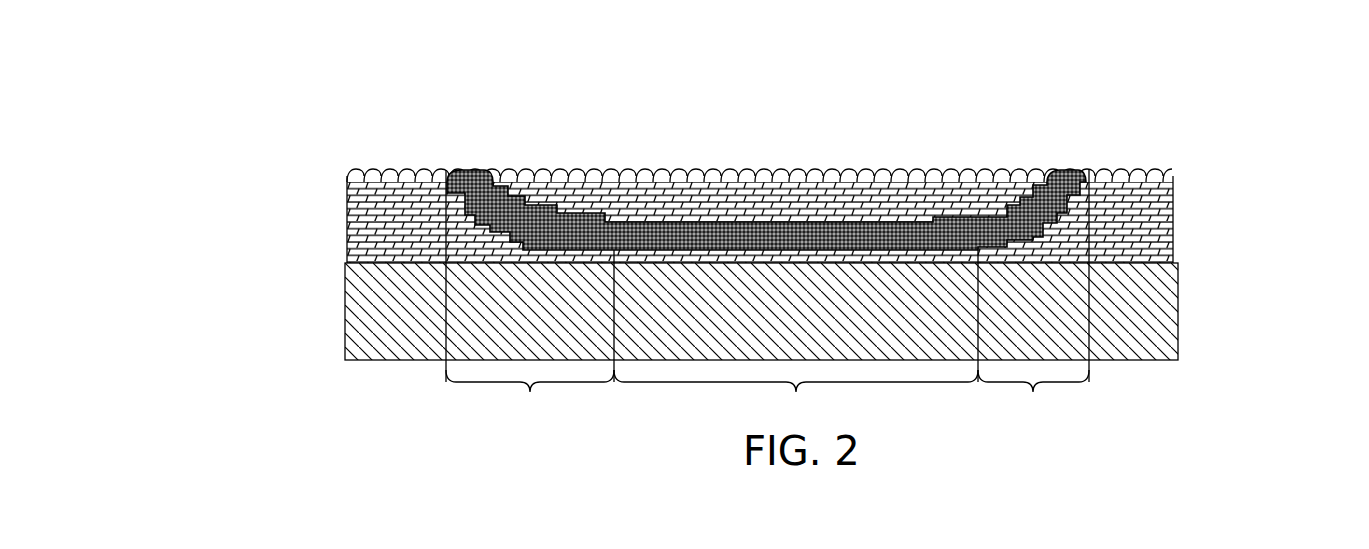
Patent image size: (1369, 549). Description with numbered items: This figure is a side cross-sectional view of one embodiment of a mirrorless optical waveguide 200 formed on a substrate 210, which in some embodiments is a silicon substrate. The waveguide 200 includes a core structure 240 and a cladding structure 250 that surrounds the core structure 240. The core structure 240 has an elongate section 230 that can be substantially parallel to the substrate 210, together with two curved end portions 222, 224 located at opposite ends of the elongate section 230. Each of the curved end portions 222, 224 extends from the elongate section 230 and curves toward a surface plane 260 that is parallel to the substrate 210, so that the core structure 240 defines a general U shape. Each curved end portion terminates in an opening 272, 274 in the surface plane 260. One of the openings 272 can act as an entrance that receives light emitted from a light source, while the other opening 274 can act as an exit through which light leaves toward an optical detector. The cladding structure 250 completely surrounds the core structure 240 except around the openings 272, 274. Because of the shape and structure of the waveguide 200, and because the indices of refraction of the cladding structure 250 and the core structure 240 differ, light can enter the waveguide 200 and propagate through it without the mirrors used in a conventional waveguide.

The mirrorless optical waveguide 200 is at (757, 224).
The substrate 210 is at (1178, 314).
The curved end portion 222 is at (530, 293).
The curved end portion 224 is at (1033, 294).
The elongate section 230 is at (796, 334).
The core structure 240 is at (817, 238).
The cladding structure 250 is at (362, 249).
The surface plane 260 is at (348, 170).
The opening 272 is at (478, 170).
The opening 274 is at (1072, 170).